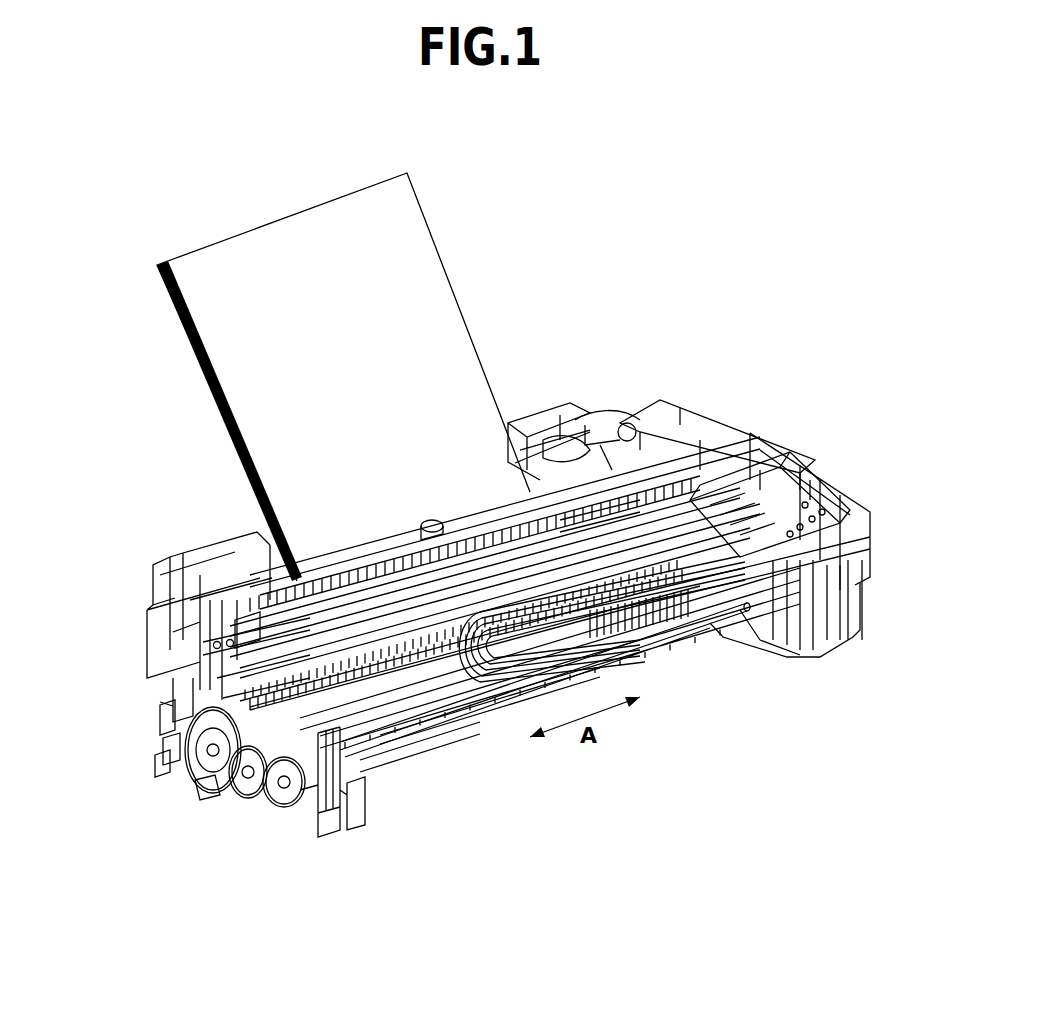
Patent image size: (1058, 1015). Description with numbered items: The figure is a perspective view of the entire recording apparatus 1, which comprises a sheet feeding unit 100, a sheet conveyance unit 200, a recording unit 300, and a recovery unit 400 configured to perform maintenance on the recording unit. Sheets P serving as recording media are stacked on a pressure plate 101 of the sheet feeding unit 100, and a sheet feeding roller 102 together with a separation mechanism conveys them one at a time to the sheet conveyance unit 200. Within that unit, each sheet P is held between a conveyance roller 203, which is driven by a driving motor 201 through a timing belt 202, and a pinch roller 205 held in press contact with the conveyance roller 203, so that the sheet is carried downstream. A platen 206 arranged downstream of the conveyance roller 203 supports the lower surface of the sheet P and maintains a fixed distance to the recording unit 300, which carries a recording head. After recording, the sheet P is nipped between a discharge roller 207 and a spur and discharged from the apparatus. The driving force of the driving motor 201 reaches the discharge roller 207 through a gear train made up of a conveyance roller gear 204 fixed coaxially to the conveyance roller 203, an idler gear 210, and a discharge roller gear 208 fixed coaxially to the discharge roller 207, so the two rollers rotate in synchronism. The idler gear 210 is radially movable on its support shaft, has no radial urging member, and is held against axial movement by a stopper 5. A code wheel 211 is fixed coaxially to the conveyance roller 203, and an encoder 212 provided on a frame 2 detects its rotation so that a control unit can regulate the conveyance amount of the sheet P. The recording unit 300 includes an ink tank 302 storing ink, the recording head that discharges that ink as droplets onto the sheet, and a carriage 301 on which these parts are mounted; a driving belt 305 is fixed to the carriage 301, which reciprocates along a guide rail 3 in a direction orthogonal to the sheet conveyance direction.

The sheet P is at (397, 248).
The recording apparatus 1 is at (700, 383).
The frame 2 is at (347, 823).
The guide rail 3 is at (237, 627).
The stopper 5 is at (230, 787).
The sheet feeding unit 100 is at (593, 375).
The pressure plate 101 is at (538, 433).
The sheet feeding roller 102 is at (432, 522).
The sheet conveyance unit 200 is at (202, 814).
The driving motor 201 is at (165, 742).
The timing belt 202 is at (162, 757).
The conveyance roller 203 is at (472, 692).
The conveyance roller gear 204 is at (203, 760).
The pinch roller 205 is at (412, 733).
The platen 206 is at (380, 763).
The discharge roller 207 is at (450, 720).
The discharge roller gear 208 is at (290, 797).
The idler gear 210 is at (253, 790).
The code wheel 211 is at (160, 563).
The encoder 212 is at (163, 723).
The recording unit 300 is at (793, 463).
The carriage 301 is at (737, 483).
The ink tank 302 is at (825, 490).
The driving belt 305 is at (612, 520).
The recovery unit 400 is at (828, 640).